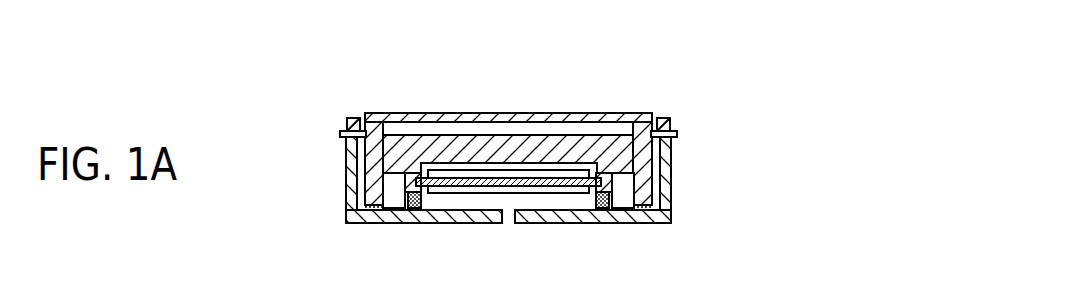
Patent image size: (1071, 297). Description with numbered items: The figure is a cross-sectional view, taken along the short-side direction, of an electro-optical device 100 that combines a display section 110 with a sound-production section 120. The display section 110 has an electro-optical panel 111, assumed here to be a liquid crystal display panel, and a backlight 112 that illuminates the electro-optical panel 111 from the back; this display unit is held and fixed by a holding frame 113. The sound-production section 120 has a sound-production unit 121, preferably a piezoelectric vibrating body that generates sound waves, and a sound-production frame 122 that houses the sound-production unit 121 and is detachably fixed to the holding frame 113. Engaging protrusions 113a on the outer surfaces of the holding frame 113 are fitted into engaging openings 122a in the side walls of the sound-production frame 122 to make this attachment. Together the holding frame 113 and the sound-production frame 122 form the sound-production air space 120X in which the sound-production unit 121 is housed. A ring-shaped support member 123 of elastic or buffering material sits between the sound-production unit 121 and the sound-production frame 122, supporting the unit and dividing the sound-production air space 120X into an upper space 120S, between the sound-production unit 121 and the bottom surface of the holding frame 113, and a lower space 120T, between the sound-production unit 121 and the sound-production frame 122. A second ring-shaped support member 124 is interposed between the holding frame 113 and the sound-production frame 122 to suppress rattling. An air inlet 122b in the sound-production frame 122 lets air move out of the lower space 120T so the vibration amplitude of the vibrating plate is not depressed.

The electro-optical device 100 is at (762, 61).
The display section 110 is at (504, 126).
The electro-optical panel 111 is at (460, 113).
The backlight 112 is at (558, 127).
The holding frame 113 is at (378, 113).
The engaging protrusion 113a is at (504, 143).
The sound-production section 120 is at (524, 148).
The upper space 120S is at (488, 170).
The lower space 120T is at (508, 114).
The sound-production air space 120X is at (573, 3).
The sound-production unit 121 is at (405, 180).
The sound-production frame 122 is at (501, 205).
The engaging opening 122a is at (346, 150).
The air inlet 122b is at (517, 213).
The support member 123 is at (420, 206).
The support member 124 is at (378, 212).